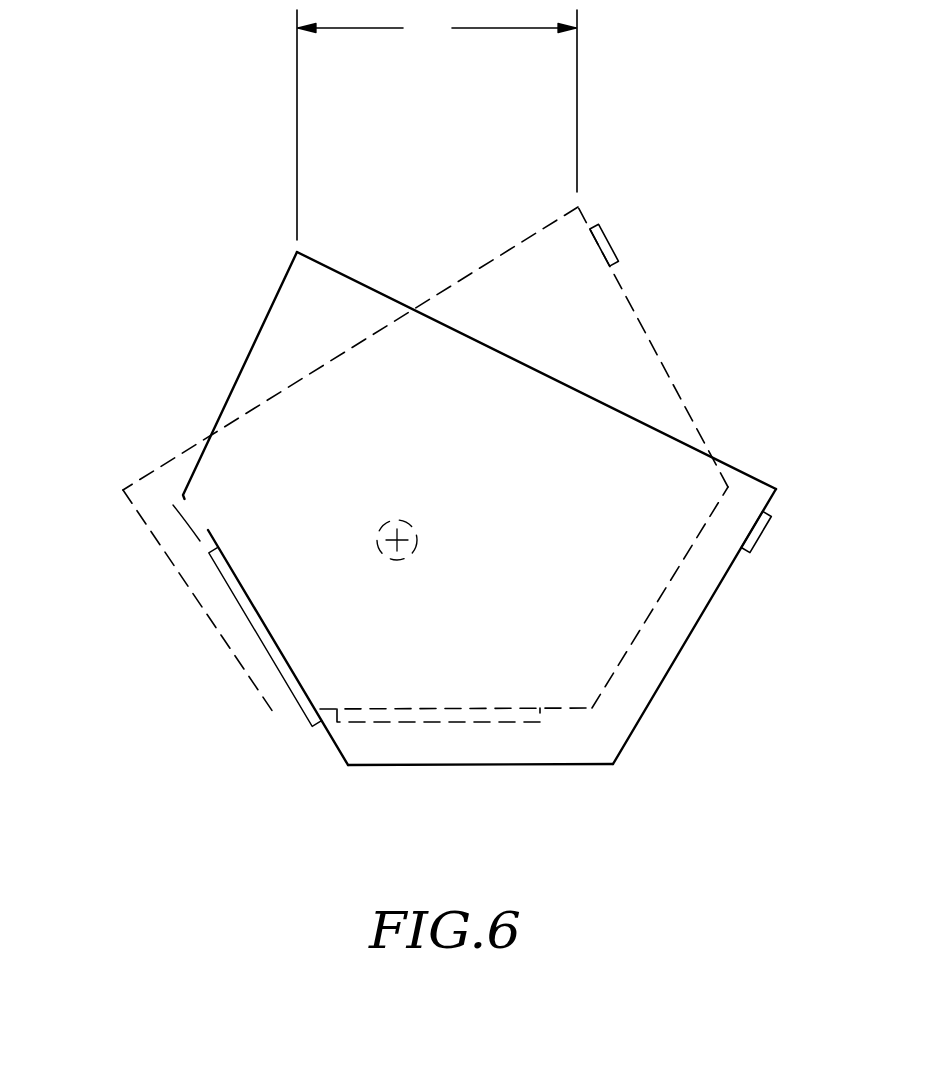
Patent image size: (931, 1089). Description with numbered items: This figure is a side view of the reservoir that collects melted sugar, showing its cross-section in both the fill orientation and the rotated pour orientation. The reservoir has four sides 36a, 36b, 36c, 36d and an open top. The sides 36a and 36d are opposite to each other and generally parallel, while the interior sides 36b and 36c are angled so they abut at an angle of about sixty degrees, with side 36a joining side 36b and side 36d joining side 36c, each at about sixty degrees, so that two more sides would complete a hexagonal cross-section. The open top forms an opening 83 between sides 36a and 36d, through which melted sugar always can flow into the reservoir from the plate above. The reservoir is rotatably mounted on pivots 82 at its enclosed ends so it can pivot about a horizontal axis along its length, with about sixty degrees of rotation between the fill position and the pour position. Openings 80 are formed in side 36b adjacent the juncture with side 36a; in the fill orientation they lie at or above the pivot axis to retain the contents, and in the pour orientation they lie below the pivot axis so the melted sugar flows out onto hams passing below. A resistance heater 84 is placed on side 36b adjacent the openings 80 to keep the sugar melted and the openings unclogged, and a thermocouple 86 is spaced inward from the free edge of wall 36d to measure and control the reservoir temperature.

The side of reservoir 36a is at (247, 355).
The interior side of reservoir 36b is at (328, 734).
The interior side of reservoir 36c is at (455, 766).
The side of reservoir 36d is at (675, 665).
The openings 80 is at (182, 524).
The pivots 82 is at (397, 540).
The opening 83 is at (437, 125).
The resistance heater 84 is at (507, 722).
The thermocouple 86 is at (607, 233).